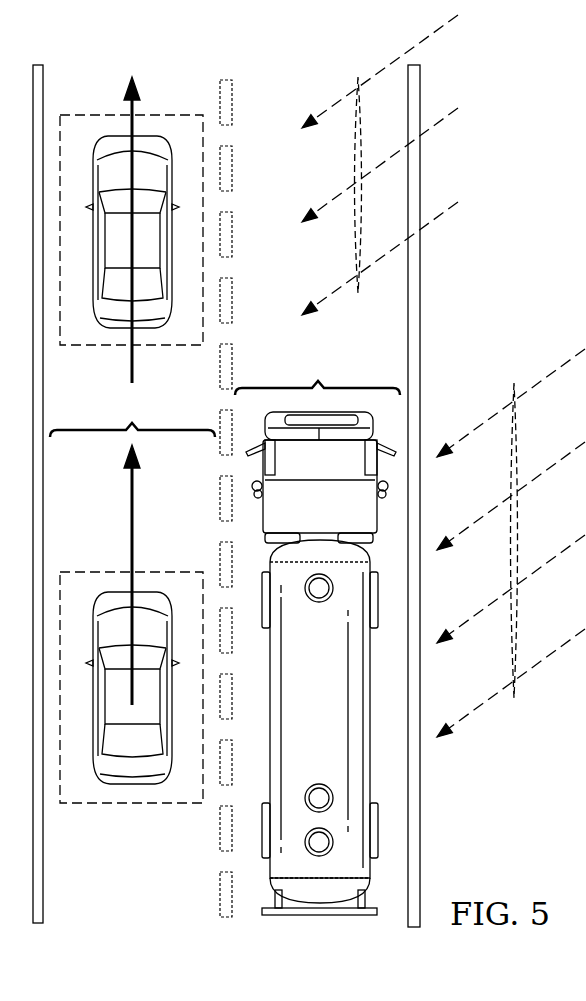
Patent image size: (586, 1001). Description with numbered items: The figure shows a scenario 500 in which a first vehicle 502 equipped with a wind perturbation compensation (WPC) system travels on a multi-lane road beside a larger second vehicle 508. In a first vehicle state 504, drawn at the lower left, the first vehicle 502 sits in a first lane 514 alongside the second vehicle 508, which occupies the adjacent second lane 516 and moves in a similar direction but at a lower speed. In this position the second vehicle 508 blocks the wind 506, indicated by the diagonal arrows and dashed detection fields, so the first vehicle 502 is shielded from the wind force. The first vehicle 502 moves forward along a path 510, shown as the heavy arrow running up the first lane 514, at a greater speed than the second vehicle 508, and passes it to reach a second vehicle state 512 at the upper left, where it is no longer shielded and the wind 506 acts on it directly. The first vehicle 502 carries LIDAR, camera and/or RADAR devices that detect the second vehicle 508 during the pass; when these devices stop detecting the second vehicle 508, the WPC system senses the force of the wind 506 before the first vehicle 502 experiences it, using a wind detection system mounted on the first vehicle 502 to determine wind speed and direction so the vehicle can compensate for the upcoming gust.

The scenario 500 is at (530, 95).
The first vehicle 502 is at (123, 133).
The first vehicle state 504 is at (178, 803).
The wind 506 is at (358, 77).
The second vehicle 508 is at (370, 763).
The path 510 is at (130, 517).
The second vehicle state 512 is at (175, 115).
The first lane 514 is at (132, 416).
The second lane 516 is at (317, 373).